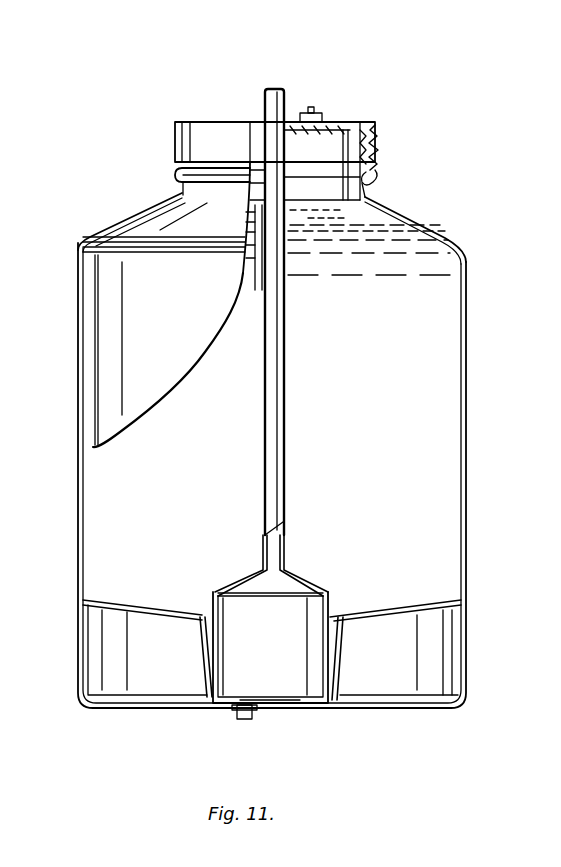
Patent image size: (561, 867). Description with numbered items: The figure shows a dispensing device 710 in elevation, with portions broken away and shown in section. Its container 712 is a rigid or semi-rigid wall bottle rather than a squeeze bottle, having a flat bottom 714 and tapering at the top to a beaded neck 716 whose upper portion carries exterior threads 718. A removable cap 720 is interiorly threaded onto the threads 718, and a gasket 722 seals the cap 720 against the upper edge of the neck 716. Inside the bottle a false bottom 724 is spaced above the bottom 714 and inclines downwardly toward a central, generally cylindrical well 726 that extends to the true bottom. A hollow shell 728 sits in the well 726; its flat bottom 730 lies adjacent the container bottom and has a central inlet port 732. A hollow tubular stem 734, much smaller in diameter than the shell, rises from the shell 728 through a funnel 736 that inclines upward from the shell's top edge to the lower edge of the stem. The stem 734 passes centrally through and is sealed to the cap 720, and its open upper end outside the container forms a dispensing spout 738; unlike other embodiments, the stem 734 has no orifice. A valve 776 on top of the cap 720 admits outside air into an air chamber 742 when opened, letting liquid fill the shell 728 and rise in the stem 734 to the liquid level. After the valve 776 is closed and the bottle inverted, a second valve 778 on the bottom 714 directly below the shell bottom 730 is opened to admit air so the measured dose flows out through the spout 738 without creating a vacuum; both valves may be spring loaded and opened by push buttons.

The dispensing device 710 is at (443, 101).
The container 712 is at (468, 345).
The bottom 714 is at (432, 708).
The neck 716 is at (374, 181).
The threads 718 is at (380, 158).
The cap 720 is at (175, 127).
The gasket 722 is at (345, 140).
The false bottom 724 is at (142, 604).
The well 726 is at (318, 646).
The shell 728 is at (217, 640).
The bottom of shell 730 is at (318, 698).
The inlet port 732 is at (266, 700).
The stem 734 is at (285, 372).
The funnel 736 is at (312, 590).
The dispensing spout 738 is at (278, 88).
The air chamber 742 is at (346, 219).
The valve 776 is at (320, 115).
The valve 778 is at (238, 712).